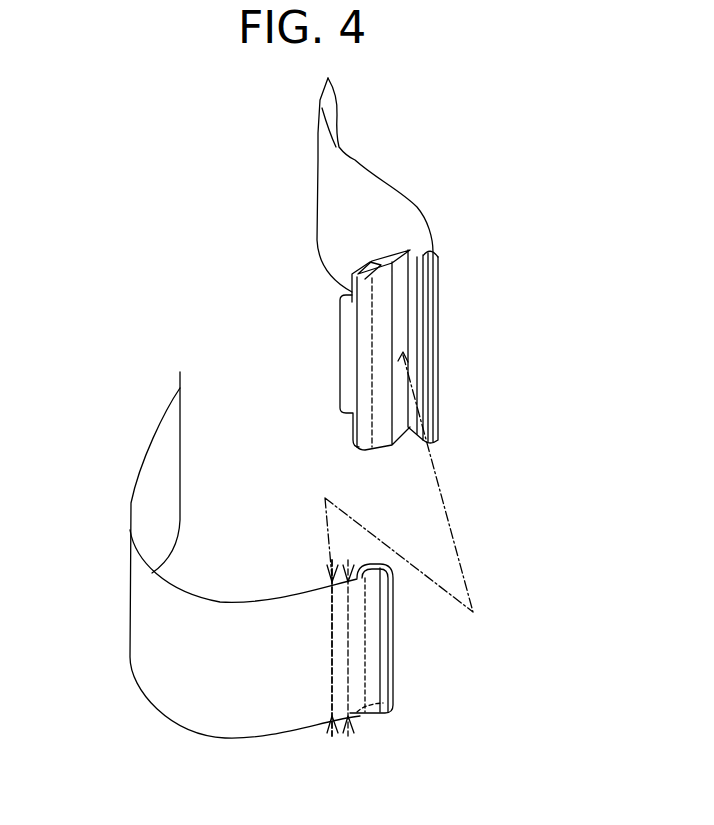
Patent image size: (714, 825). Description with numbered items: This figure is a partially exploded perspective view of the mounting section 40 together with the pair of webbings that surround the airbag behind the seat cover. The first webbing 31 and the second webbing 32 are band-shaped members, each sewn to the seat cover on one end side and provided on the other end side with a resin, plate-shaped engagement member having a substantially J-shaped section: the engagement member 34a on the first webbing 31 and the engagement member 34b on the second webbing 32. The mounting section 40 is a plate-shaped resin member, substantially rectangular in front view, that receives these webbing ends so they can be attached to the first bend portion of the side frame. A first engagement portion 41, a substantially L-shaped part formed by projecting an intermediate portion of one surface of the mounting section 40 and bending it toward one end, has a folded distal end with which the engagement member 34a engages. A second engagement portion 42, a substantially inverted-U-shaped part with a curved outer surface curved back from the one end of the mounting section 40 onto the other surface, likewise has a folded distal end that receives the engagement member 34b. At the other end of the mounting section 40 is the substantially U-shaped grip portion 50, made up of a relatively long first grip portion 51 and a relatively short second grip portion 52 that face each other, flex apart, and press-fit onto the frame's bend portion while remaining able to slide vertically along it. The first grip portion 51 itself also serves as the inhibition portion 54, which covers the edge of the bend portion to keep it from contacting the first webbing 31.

The first webbing 31 is at (318, 149).
The second webbing 32 is at (130, 615).
The engagement member 34a is at (348, 363).
The engagement member 34b is at (395, 654).
The mounting section 40 is at (431, 317).
The first engagement portion 41 is at (367, 263).
The second engagement portion 42 is at (383, 320).
The grip portion 50 is at (513, 346).
The first grip portion 51 is at (437, 270).
The second grip portion 52 is at (437, 258).
The inhibition portion 54 is at (478, 345).